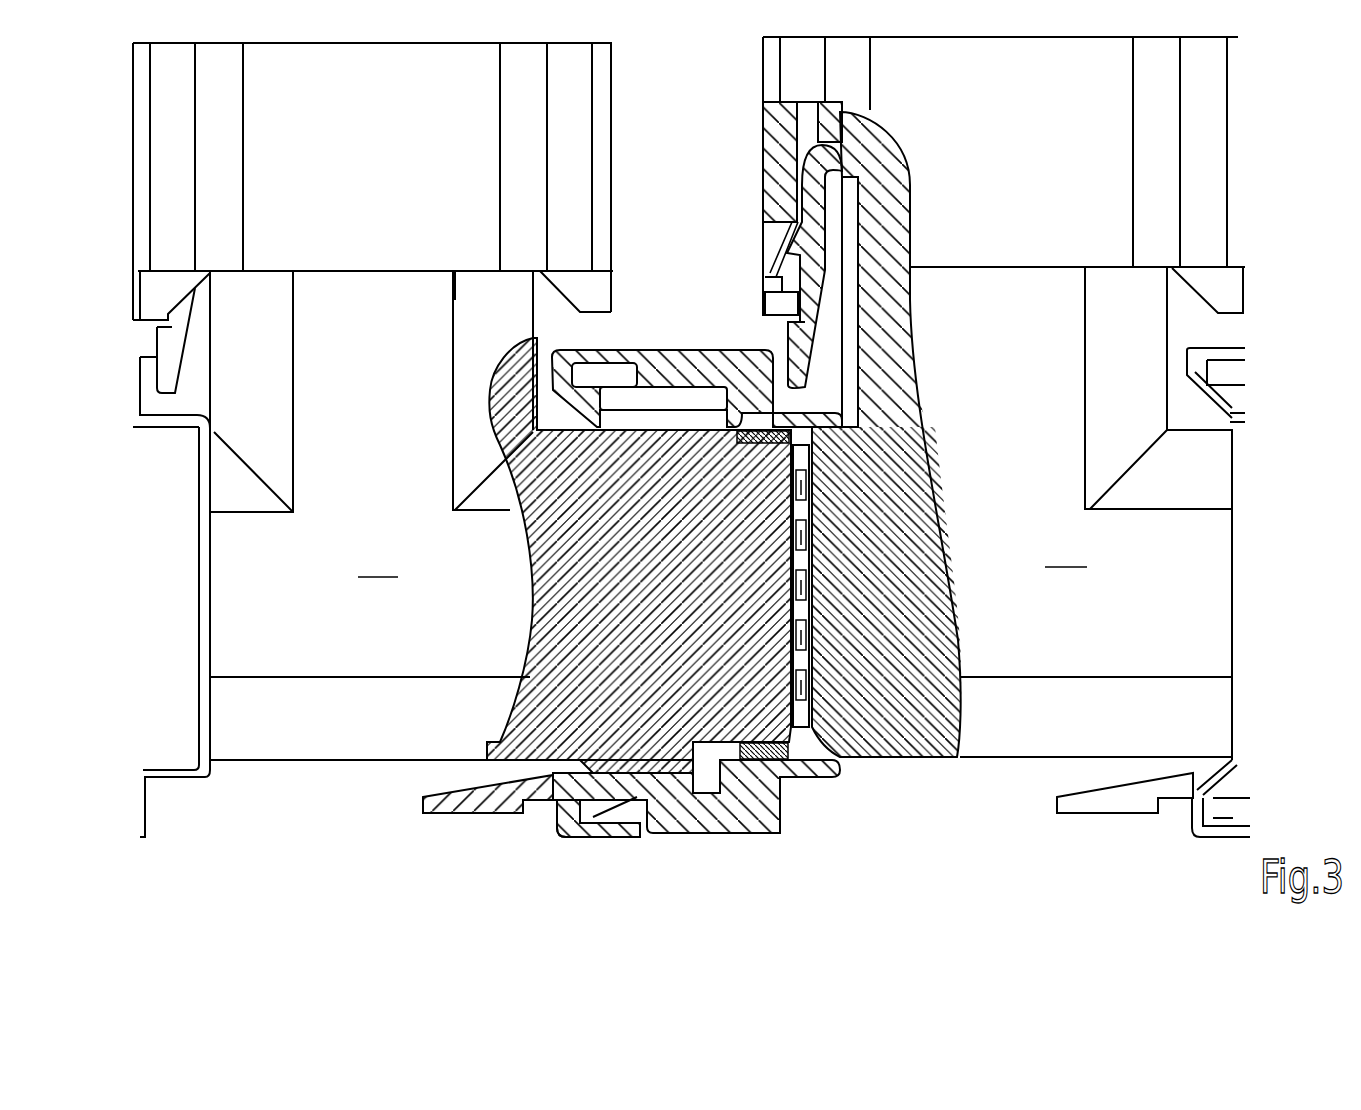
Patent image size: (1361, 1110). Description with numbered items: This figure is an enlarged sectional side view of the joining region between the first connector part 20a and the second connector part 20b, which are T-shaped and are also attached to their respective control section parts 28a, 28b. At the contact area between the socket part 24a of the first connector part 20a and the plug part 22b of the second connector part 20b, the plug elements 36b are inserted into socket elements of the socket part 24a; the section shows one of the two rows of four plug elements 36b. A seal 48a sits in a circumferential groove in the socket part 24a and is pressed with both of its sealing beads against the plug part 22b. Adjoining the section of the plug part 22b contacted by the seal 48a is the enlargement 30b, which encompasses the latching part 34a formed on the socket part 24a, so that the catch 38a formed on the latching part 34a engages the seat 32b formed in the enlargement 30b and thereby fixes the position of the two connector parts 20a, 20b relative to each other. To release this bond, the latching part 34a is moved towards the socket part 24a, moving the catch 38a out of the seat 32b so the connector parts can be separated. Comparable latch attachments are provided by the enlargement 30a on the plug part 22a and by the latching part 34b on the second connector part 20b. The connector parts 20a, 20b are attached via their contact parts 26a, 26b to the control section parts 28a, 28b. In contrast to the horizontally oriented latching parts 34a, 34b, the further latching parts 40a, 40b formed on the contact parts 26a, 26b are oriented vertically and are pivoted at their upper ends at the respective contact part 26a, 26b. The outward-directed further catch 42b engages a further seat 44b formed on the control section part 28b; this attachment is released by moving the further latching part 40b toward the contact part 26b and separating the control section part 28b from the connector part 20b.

The first connector part 20a is at (413, 520).
The second connector part 20b is at (1102, 514).
The plug part 22a is at (267, 648).
The plug part 22b is at (917, 643).
The socket part 24a is at (727, 580).
The contact part 26a is at (415, 297).
The contact part 26b is at (970, 300).
The control section part 28a is at (467, 162).
The control section part 28b is at (805, 62).
The enlargement 30a is at (163, 760).
The enlargement 30b is at (783, 793).
The seat 32b is at (608, 377).
The latching part 34a is at (480, 815).
The latching part 34b is at (1108, 803).
The plug elements 36b is at (805, 677).
The catch 38a is at (583, 837).
The further latching part 40a is at (170, 358).
The further latching part 40b is at (800, 353).
The further catch 42b is at (785, 275).
The further seat 44b is at (768, 243).
The seal 48a is at (753, 427).